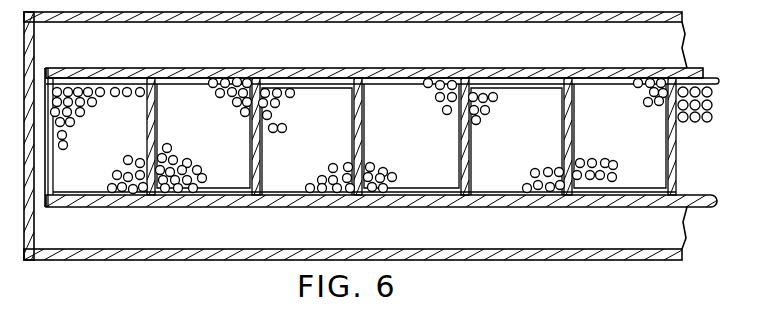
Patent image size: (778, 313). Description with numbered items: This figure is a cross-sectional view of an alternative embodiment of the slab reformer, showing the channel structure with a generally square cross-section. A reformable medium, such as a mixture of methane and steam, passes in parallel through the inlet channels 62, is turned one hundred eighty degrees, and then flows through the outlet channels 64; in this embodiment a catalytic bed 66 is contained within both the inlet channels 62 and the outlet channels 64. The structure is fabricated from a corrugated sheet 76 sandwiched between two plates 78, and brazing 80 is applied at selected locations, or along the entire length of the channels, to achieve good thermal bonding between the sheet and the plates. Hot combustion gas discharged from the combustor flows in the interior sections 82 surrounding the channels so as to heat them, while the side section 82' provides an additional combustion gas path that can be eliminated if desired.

The inlet channels 62 is at (223, 142).
The outlet channels 64 is at (321, 142).
The catalytic bed 66 is at (127, 97).
The corrugated sheet 76 is at (718, 85).
The plates 78 is at (78, 77).
The brazing 80 is at (303, 76).
The interior sections 82 is at (355, 136).
The side section 82' is at (61, 155).